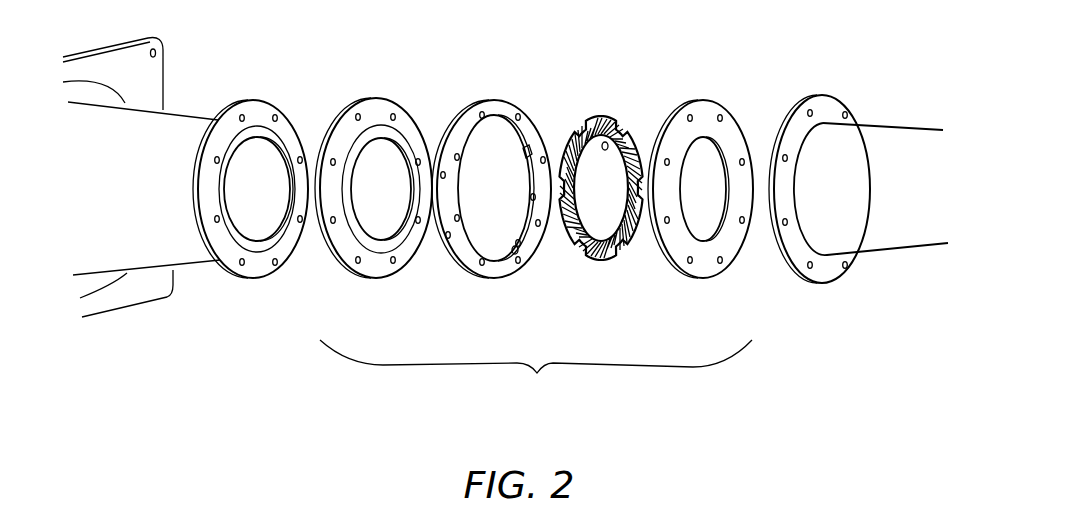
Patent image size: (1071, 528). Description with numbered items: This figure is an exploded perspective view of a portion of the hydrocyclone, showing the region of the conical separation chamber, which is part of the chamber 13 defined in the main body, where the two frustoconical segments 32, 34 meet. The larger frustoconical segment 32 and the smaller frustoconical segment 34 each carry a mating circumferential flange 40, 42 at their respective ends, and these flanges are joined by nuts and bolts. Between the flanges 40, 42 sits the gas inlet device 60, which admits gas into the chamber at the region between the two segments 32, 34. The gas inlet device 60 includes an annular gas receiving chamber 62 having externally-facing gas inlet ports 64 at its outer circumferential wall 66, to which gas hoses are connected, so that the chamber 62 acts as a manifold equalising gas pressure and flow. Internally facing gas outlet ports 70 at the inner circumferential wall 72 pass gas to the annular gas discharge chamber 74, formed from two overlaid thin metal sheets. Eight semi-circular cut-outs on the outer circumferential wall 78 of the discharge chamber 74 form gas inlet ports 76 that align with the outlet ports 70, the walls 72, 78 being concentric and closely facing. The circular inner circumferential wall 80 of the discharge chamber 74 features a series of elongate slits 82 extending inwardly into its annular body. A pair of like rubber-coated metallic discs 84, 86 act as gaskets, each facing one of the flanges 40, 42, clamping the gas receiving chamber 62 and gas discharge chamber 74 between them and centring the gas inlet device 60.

The chamber 13 is at (487, 180).
The frustoconical segment 32 is at (157, 135).
The frustoconical segment 34 is at (883, 155).
The circumferential flange 40 is at (259, 117).
The circumferential flange 42 is at (830, 112).
The gas inlet device 60 is at (536, 370).
The gas receiving chamber 62 is at (485, 167).
The gas inlet port 64 is at (458, 117).
The outer circumferential wall 66 is at (470, 100).
The gas outlet port 70 is at (527, 153).
The inner circumferential wall 72 is at (512, 253).
The gas discharge chamber 74 is at (617, 179).
The gas inlet port 76 is at (625, 247).
The outer circumferential wall 78 is at (605, 260).
The inner circumferential wall 80 is at (607, 148).
The elongate slit 82 is at (630, 140).
The metallic disc 84 is at (343, 123).
The metallic disc 86 is at (705, 260).